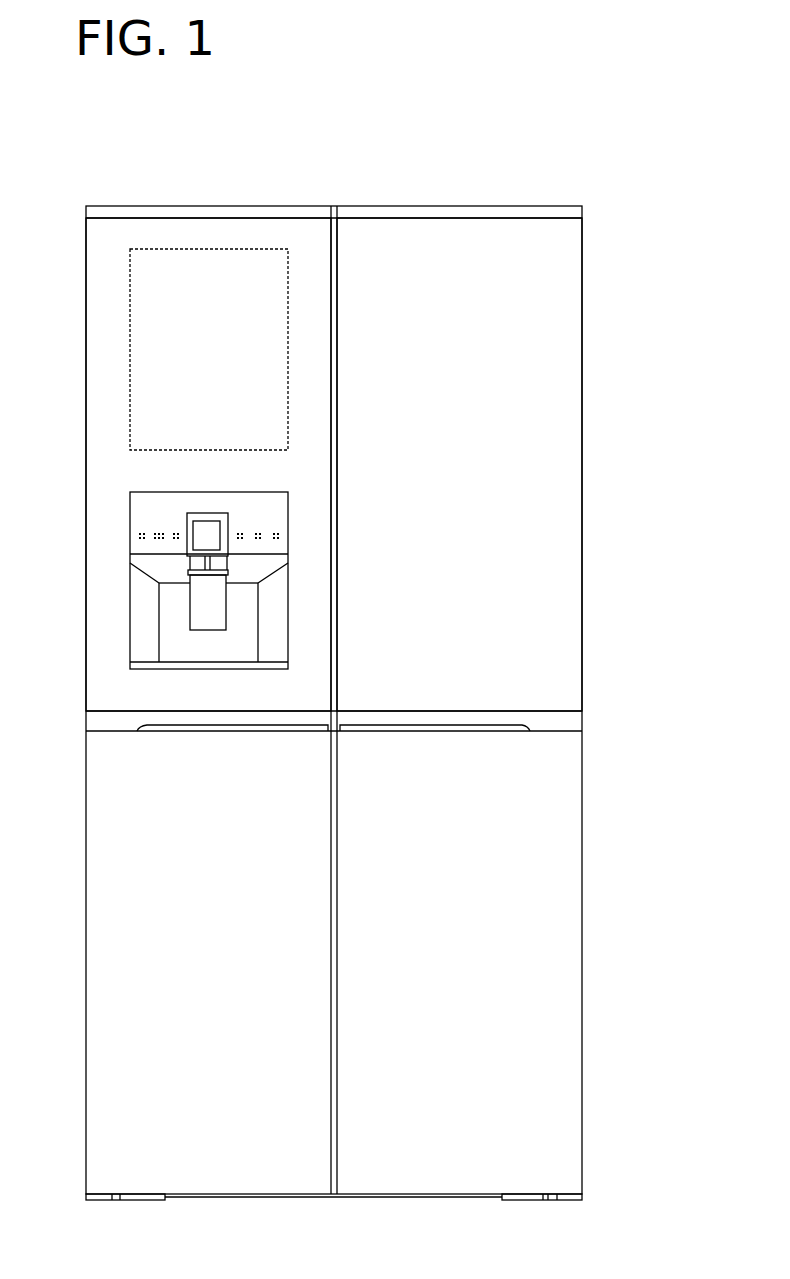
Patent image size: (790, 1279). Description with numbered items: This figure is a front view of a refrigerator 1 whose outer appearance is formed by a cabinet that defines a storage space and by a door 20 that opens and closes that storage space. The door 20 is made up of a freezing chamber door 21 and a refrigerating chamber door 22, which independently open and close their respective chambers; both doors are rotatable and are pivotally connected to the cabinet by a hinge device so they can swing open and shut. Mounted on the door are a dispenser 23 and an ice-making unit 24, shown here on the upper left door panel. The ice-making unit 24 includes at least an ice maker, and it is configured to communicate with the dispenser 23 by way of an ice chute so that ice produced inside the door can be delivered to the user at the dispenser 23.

The refrigerator 1 is at (319, 625).
The door 20 is at (334, 381).
The freezing chamber door 21 is at (265, 222).
The refrigerating chamber door 22 is at (366, 222).
The dispenser 23 is at (118, 603).
The ice-making unit 24 is at (118, 362).